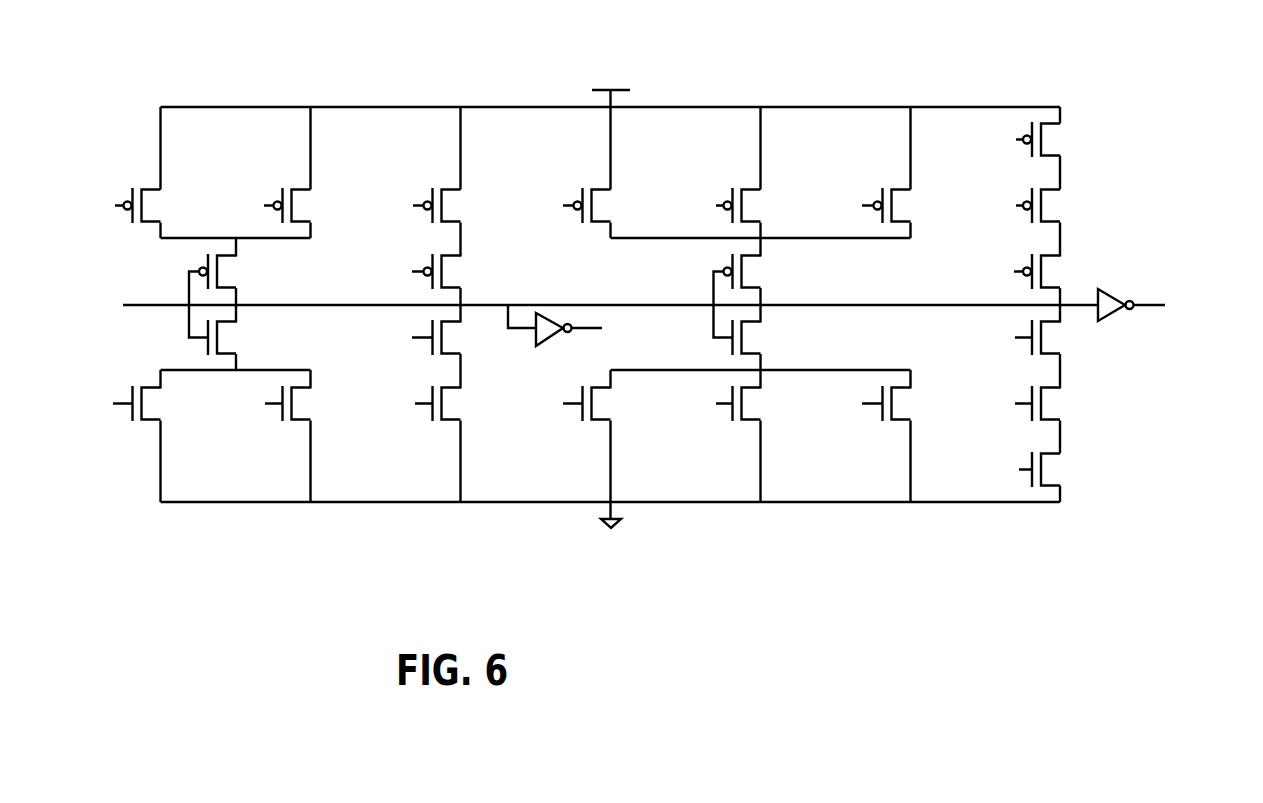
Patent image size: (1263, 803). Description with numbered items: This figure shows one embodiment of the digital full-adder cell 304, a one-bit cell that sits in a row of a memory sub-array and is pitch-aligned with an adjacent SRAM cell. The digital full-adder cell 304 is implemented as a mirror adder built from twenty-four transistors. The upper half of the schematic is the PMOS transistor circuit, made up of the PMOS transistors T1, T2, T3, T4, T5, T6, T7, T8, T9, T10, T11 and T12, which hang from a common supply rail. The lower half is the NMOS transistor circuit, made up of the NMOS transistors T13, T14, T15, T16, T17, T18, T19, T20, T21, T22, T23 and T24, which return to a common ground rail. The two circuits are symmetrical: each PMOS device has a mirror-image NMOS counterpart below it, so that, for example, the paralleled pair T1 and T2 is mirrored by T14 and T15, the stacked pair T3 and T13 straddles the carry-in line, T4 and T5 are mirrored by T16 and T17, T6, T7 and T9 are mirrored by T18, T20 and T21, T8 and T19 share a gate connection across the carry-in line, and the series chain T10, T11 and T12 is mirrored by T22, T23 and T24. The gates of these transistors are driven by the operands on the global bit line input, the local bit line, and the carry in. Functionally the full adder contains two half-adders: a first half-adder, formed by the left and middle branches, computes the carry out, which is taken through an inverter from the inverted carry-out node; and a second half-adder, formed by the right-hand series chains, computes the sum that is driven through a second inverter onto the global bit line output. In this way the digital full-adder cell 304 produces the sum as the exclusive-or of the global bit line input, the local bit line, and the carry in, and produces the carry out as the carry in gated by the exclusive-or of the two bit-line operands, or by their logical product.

The digital full-adder cell 304 is at (654, 291).
The PMOS transistor T1 is at (153, 205).
The PMOS transistor T2 is at (301, 205).
The PMOS transistor T3 is at (225, 271).
The PMOS transistor T4 is at (453, 205).
The PMOS transistor T5 is at (448, 271).
The PMOS transistor T6 is at (600, 205).
The PMOS transistor T7 is at (749, 205).
The PMOS transistor T8 is at (750, 271).
The PMOS transistor T9 is at (897, 205).
The PMOS transistor T10 is at (1053, 139).
The PMOS transistor T11 is at (1053, 205).
The PMOS transistor T12 is at (1053, 271).
The NMOS transistor T13 is at (235, 337).
The NMOS transistor T14 is at (161, 403).
The NMOS transistor T15 is at (311, 403).
The NMOS transistor T16 is at (458, 337).
The NMOS transistor T17 is at (458, 403).
The NMOS transistor T18 is at (616, 403).
The NMOS transistor T19 is at (758, 337).
The NMOS transistor T20 is at (760, 403).
The NMOS transistor T21 is at (907, 403).
The NMOS transistor T22 is at (1060, 337).
The NMOS transistor T23 is at (1057, 403).
The NMOS transistor T24 is at (1058, 469).